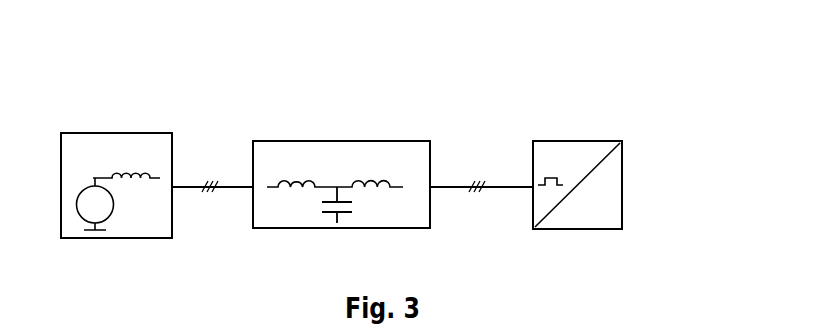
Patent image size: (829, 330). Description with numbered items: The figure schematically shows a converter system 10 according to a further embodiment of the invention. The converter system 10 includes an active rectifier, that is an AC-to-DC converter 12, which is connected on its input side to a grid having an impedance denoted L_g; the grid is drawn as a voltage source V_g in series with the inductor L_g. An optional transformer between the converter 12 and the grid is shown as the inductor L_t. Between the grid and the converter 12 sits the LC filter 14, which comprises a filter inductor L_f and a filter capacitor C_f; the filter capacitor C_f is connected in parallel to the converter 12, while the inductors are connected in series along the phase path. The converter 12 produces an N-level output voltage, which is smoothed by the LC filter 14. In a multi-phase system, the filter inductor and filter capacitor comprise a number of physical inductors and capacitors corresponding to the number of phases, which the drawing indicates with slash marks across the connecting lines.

The converter system 10 is at (625, 123).
The active rectifier (AC-to-DC converter) 12 is at (136, 133).
The LC filter 14 is at (347, 141).